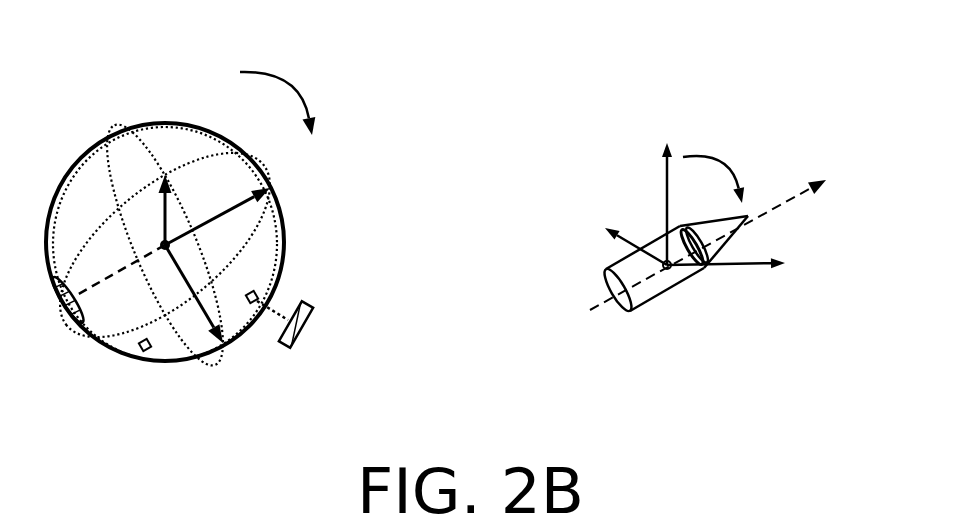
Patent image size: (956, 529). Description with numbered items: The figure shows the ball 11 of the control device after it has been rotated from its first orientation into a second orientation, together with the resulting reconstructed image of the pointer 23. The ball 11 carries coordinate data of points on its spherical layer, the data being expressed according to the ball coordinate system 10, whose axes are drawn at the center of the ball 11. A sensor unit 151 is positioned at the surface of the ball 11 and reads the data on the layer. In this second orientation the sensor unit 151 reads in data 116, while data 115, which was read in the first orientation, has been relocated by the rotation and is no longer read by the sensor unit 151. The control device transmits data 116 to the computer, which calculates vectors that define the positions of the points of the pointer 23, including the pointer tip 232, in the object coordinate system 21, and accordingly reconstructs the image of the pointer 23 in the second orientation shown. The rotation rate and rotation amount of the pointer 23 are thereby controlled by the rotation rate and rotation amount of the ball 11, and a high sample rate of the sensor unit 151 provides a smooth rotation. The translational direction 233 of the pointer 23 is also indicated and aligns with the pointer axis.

The ball coordinate system 10 is at (207, 320).
The ball 11 is at (275, 275).
The data 115 is at (140, 352).
The data 116 is at (258, 295).
The sensor unit 151 is at (313, 310).
The object coordinate system 21 is at (663, 180).
The pointer 23 is at (648, 287).
The pointer tip 232 is at (747, 217).
The translational direction 233 is at (828, 176).